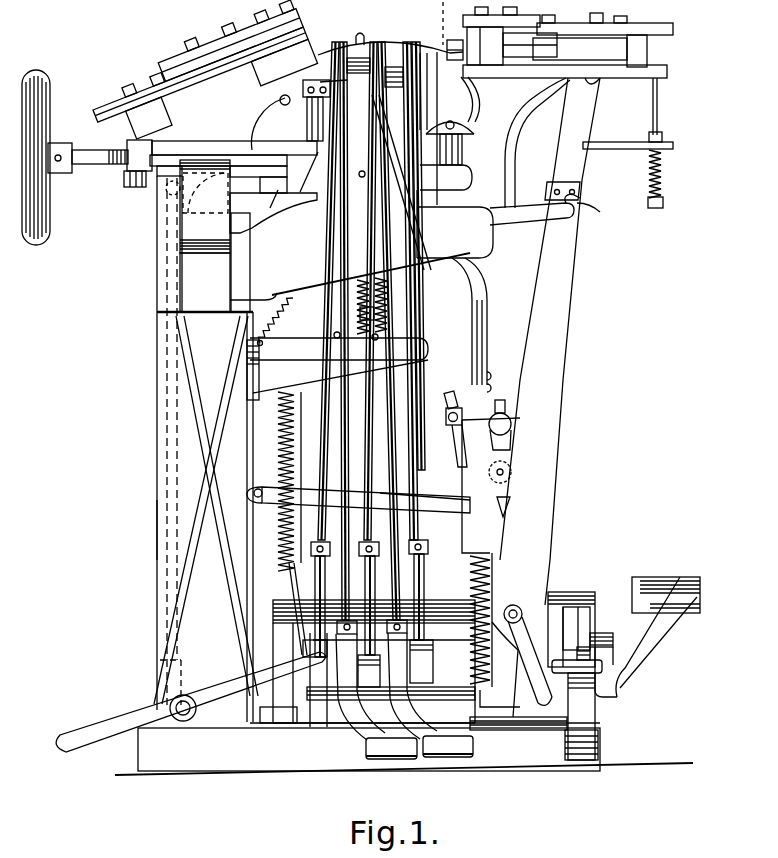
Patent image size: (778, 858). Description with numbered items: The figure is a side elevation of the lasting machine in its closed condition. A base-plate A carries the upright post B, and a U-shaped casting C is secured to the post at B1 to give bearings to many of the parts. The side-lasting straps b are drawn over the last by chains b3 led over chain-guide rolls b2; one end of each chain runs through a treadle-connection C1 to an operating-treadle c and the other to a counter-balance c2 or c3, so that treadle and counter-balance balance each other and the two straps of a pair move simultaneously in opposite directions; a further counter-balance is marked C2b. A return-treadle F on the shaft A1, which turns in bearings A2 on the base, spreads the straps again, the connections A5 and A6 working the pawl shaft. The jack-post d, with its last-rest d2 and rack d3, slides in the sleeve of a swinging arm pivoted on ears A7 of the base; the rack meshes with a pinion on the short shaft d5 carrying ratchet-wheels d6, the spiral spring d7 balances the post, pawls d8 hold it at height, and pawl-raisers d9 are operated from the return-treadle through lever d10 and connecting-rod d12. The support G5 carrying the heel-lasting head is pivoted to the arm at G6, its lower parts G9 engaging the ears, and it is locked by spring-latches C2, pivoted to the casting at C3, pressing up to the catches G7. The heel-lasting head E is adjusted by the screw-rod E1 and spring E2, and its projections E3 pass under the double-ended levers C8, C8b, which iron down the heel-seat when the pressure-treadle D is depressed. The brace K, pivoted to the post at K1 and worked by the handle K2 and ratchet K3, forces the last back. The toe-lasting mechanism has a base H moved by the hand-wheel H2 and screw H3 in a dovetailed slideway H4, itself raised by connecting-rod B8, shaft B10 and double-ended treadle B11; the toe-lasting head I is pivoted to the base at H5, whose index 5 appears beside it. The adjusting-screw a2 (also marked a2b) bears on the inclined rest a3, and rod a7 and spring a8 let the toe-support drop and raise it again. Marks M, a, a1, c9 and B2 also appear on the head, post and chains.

The hand-wheel H2 is at (47, 157).
The screw H3 is at (118, 172).
The base H is at (233, 152).
The dovetailed slideway H4 is at (162, 172).
The pivot of the toe-lasting head H5 is at (255, 124).
The post B is at (206, 449).
The connecting-rod B8 is at (167, 540).
The attachment point of casting on post B1 is at (250, 275).
The double-ended lever C8 is at (262, 205).
The rigid inclined rest a3 is at (279, 199).
The adjusting-screw a2 is at (307, 181).
The tilted carriage I is at (200, 75).
The pivot 5 is at (270, 106).
The link a' a1 is at (312, 104).
The head block a is at (345, 79).
The chain-guide rolls b2 is at (353, 57).
The center line M is at (449, 22).
The chain b3 is at (370, 220).
The side-lasting straps b is at (401, 331).
The pin c9 is at (362, 170).
The ratchet K3 is at (350, 298).
The handle K2 is at (374, 317).
The bar B2 is at (337, 366).
The rod a7 is at (300, 403).
The spring a8 is at (280, 442).
The pivot of brace on post K1 is at (268, 510).
The brace K is at (446, 505).
The last-rest d2 is at (474, 130).
The jack-post d is at (462, 150).
The double-ended lever C8b is at (470, 177).
The U-shaped casting C is at (455, 287).
The rack d3 is at (495, 380).
The spring-latches C2 is at (526, 218).
The projections E3 is at (538, 133).
The support for the heel-lasting head G5 is at (556, 303).
The catches G7 is at (599, 210).
The heel-lasting head E is at (560, 42).
The adjusting screw-rod E1 is at (630, 113).
The spring E2 is at (663, 168).
The pivot of spring-latches C3 is at (475, 552).
The spiral spring d7 is at (471, 620).
The lever d10 is at (444, 437).
The connecting-rod d12 is at (457, 386).
The pawl-raisers d9 is at (495, 440).
The short shaft d5 is at (510, 470).
The ratchet-wheels d6 is at (508, 458).
The pawls d8 is at (500, 442).
The pivot of support on swinging arm G6 is at (522, 649).
The lower parts of the support G9 is at (545, 705).
The ears A7 is at (500, 694).
The bearings A2 is at (552, 612).
The shaft A1 is at (596, 600).
The connection A6 is at (594, 624).
The pressure-treadle D is at (590, 714).
The connection A5 is at (603, 643).
The return-treadle F is at (668, 592).
The base-plate A is at (404, 741).
The double-ended treadle B11 is at (140, 715).
The shaft B10 is at (183, 722).
The adjusting-screw a2b is at (292, 600).
The operating-treadle c is at (374, 679).
The counter-balance c3 is at (365, 598).
The treadle-connection C1 is at (338, 680).
The counter-balance c2 is at (369, 671).
The counter-balance C2b is at (433, 663).